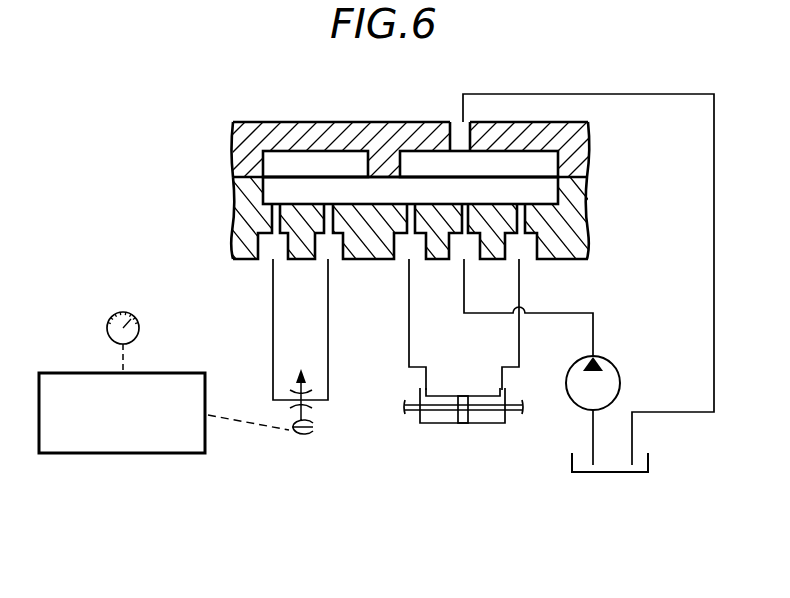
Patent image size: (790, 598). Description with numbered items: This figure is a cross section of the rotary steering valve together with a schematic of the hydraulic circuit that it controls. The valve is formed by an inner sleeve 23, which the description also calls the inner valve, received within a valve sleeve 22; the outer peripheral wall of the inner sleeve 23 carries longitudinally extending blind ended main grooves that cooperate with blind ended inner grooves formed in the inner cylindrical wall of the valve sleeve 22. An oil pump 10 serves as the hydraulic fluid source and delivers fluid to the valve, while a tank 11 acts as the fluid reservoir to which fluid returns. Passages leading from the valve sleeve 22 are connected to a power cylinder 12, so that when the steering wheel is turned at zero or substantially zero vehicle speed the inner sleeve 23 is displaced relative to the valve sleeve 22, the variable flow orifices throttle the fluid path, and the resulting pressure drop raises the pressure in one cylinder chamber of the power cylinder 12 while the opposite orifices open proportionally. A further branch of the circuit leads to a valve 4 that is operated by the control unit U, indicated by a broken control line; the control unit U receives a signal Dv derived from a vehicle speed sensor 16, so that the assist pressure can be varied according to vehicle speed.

The flow control valve 4 is at (268, 346).
The oil pump 10 is at (617, 367).
The tank 11 is at (649, 462).
The power cylinder 12 is at (440, 424).
The vehicle speed sensor 16 is at (122, 312).
The valve sleeve 22 is at (580, 224).
The inner sleeve 23 is at (587, 157).
The pressure signal Dv is at (140, 358).
The control unit U is at (116, 454).